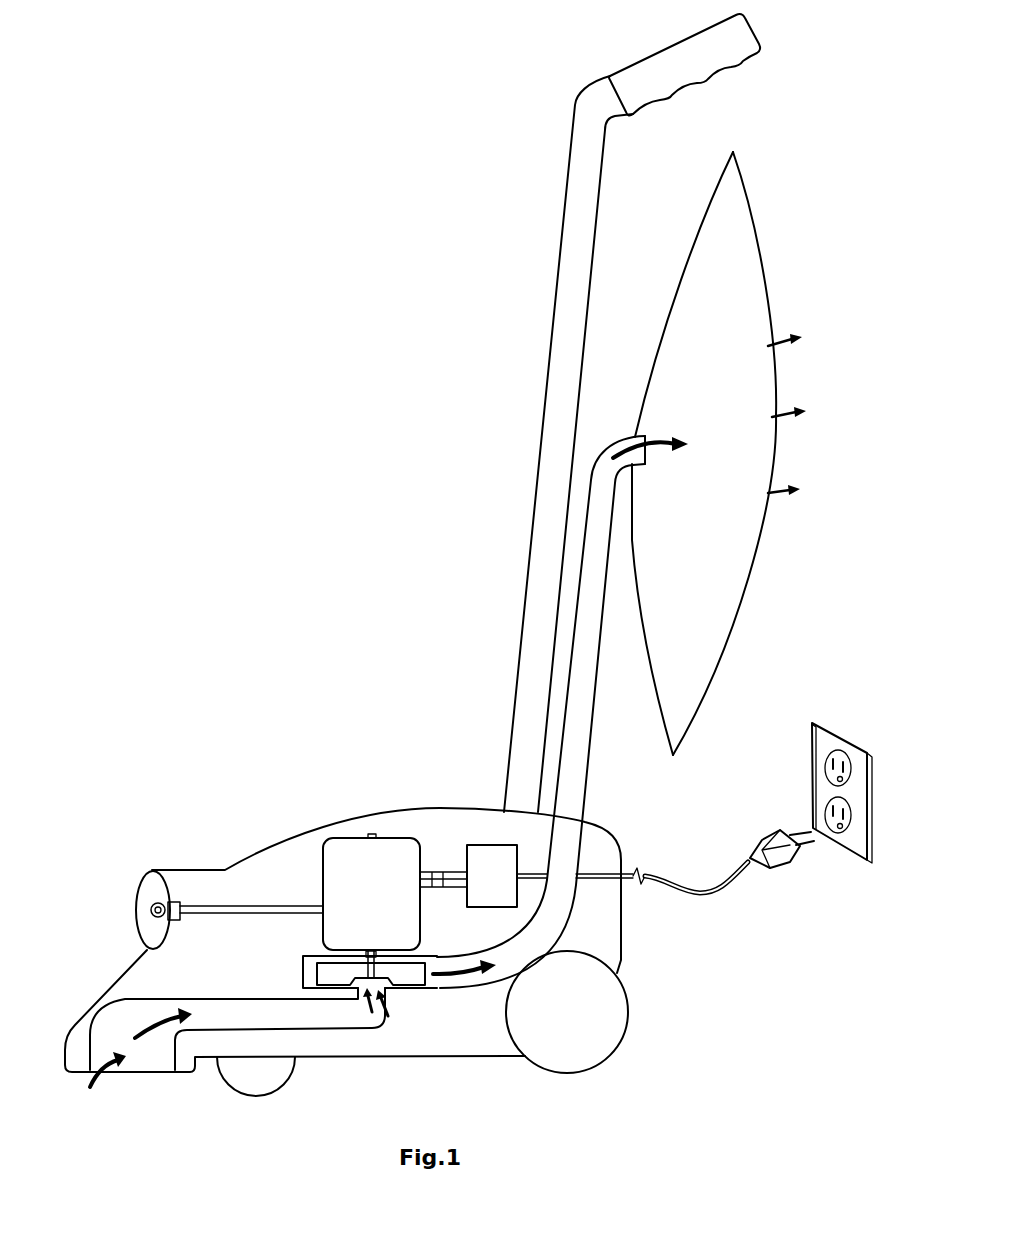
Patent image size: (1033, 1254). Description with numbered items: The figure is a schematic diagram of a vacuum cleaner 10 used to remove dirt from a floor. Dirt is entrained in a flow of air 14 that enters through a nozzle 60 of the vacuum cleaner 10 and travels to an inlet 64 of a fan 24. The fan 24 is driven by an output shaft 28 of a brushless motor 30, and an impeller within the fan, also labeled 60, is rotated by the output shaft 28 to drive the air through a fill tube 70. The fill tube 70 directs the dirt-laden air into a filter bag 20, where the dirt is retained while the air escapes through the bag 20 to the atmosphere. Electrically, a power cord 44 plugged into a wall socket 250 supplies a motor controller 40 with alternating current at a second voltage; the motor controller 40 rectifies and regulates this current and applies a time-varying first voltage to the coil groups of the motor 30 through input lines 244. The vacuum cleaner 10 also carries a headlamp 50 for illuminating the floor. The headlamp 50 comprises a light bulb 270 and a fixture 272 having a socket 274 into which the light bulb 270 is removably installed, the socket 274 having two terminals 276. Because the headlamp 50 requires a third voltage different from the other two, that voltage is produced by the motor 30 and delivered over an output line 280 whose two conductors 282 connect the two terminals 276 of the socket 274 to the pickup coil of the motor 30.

The vacuum cleaner 10 is at (302, 250).
The flow of air 14 is at (103, 1073).
The filter bag 20 is at (743, 610).
The fan 24 is at (434, 946).
The output shaft 28 is at (343, 947).
The brushless motor 30 is at (345, 830).
The motor controller 40 is at (473, 845).
The power cord 44 is at (727, 873).
The headlamp 50 is at (137, 862).
The nozzle 60 is at (72, 1075).
The inlet 64 is at (388, 1010).
The fill tube 70 is at (590, 723).
The input line 244 is at (455, 872).
The wall socket 250 is at (840, 730).
The light bulb 270 is at (150, 905).
The fixture 272 is at (165, 940).
The socket 274 is at (173, 922).
The terminals 276 is at (183, 903).
The output line 280 is at (228, 895).
The conductors 282 is at (287, 912).